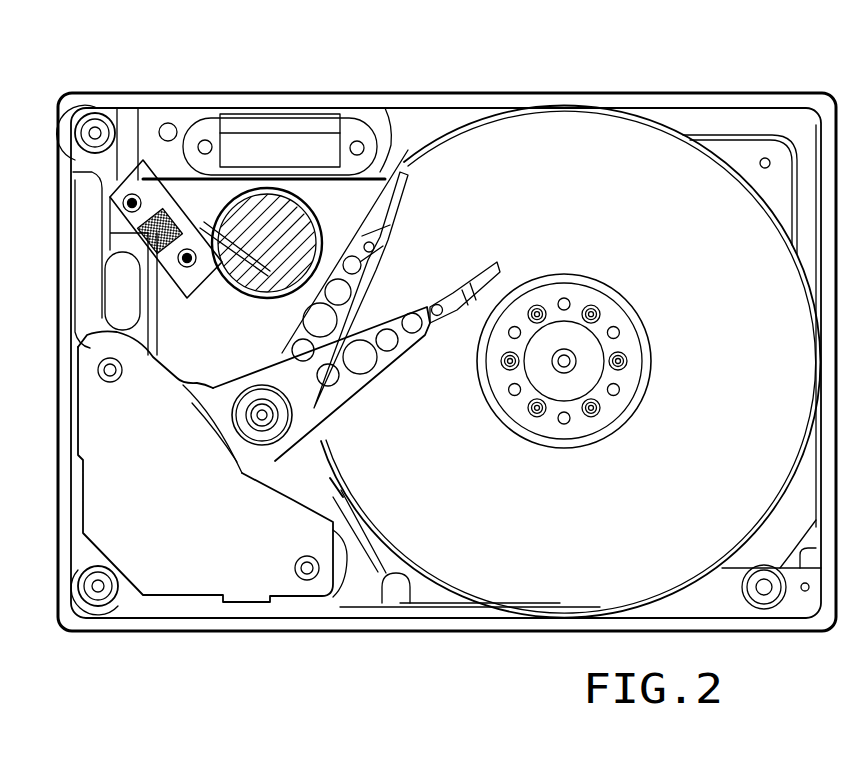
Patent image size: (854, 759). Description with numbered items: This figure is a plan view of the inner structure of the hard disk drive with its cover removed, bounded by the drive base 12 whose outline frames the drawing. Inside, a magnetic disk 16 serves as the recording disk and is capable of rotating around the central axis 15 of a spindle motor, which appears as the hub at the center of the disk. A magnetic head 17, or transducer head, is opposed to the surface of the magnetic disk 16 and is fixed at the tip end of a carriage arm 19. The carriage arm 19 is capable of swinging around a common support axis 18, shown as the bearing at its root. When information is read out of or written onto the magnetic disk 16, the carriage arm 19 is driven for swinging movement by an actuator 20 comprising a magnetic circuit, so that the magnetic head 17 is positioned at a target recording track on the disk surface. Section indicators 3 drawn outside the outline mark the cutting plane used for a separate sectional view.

The housing / base casting 12 is at (627, 91).
The central axis 15 is at (586, 376).
The magnetic disk 16 is at (642, 214).
The magnetic head 17 is at (496, 268).
The common support axis 18 is at (262, 412).
The carriage arm 19 is at (398, 354).
The actuator 20 is at (188, 508).
The section line for FIG. 3 is at (752, 32).